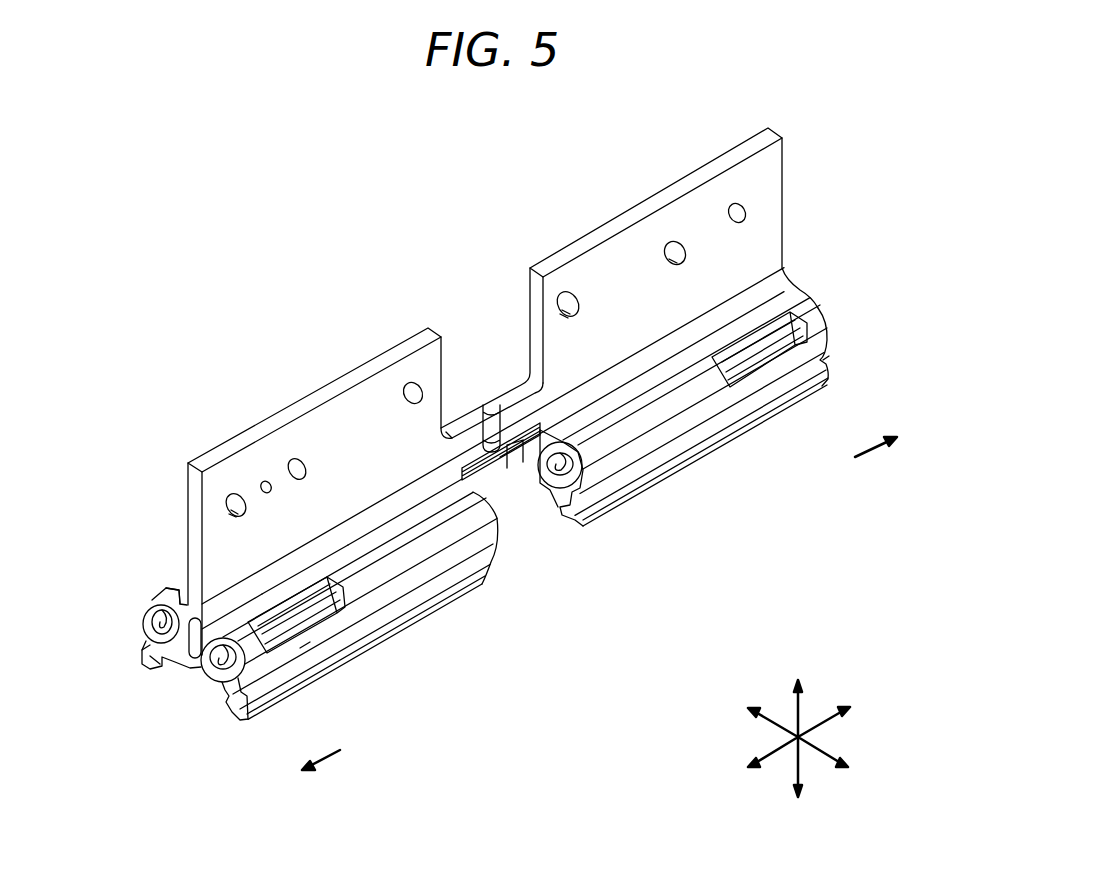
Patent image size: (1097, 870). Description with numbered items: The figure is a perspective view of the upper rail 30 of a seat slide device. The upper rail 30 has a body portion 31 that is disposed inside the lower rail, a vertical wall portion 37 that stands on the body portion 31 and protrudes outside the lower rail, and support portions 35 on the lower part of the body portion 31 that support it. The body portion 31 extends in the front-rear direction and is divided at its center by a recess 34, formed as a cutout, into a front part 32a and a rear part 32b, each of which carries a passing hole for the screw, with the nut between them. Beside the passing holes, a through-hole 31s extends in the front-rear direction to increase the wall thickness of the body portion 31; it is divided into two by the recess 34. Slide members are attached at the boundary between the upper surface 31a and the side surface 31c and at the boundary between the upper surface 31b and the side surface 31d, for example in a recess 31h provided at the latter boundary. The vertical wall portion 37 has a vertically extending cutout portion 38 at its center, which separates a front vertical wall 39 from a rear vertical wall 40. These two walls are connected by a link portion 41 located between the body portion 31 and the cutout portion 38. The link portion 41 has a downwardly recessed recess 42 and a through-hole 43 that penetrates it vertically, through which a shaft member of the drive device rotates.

The upper rail 30 is at (812, 107).
The body portion 31 is at (486, 513).
The upper surface 31a is at (295, 588).
The upper surface 31b is at (170, 588).
The side surface 31c is at (302, 647).
The side surface 31d is at (150, 608).
The recess 31h is at (185, 578).
The through-hole 31s is at (157, 667).
The front part 32a is at (360, 610).
The rear part 32b is at (683, 412).
The recess 34 is at (583, 530).
The support portion 35 is at (147, 647).
The vertical wall portion 37 is at (803, 215).
The cutout portion 38 is at (505, 368).
The front vertical wall 39 is at (468, 403).
The rear vertical wall 40 is at (655, 222).
The link portion 41 is at (460, 426).
The recess 42 is at (480, 404).
The through-hole 43 is at (515, 420).